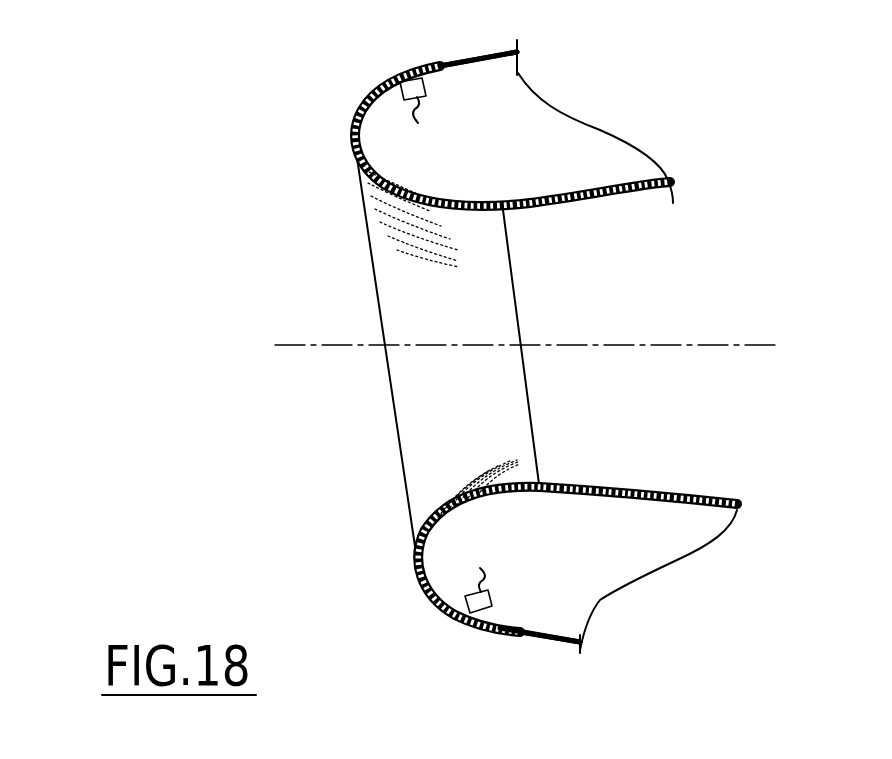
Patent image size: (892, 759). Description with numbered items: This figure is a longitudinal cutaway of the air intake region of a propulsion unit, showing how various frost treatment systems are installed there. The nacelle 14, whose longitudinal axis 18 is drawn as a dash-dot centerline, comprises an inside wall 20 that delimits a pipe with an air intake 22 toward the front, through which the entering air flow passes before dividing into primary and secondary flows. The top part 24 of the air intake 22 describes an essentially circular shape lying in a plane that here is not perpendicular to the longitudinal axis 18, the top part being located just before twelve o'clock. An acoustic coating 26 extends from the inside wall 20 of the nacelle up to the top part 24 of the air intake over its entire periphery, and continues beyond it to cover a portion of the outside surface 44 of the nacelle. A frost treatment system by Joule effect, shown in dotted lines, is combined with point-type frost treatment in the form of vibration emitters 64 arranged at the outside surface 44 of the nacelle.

The nacelle 14 is at (548, 641).
The longitudinal axis 18 is at (660, 345).
The inside wall 20 is at (625, 195).
The air intake 22 is at (395, 303).
The top part of the air intake 24 is at (353, 140).
The acoustic coating 26 is at (570, 188).
The outside surface of the nacelle 44 is at (452, 60).
The vibration emitter 64 is at (425, 88).